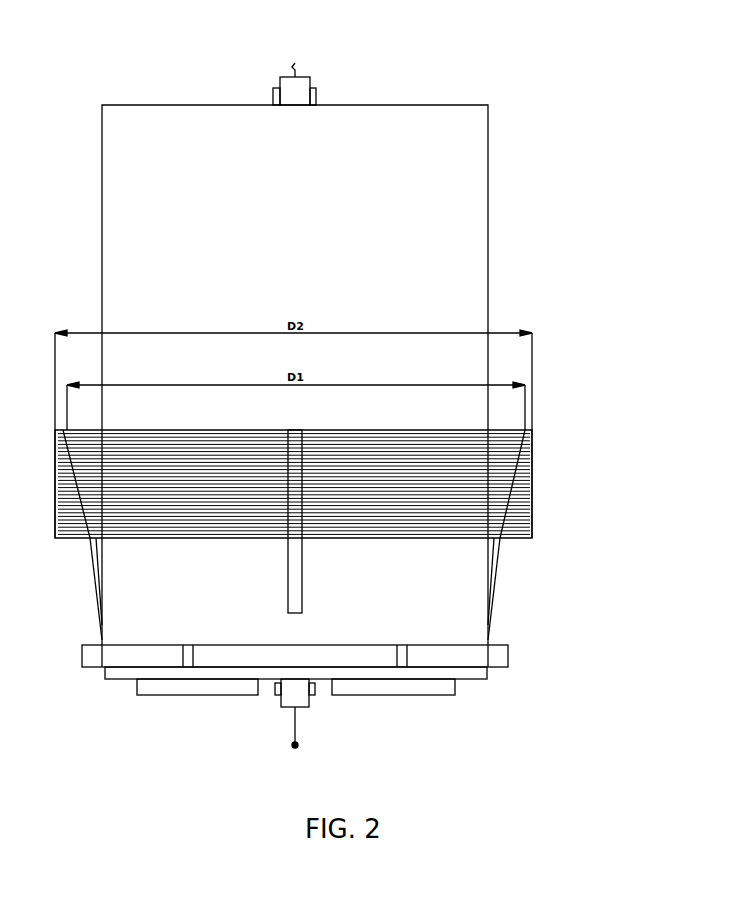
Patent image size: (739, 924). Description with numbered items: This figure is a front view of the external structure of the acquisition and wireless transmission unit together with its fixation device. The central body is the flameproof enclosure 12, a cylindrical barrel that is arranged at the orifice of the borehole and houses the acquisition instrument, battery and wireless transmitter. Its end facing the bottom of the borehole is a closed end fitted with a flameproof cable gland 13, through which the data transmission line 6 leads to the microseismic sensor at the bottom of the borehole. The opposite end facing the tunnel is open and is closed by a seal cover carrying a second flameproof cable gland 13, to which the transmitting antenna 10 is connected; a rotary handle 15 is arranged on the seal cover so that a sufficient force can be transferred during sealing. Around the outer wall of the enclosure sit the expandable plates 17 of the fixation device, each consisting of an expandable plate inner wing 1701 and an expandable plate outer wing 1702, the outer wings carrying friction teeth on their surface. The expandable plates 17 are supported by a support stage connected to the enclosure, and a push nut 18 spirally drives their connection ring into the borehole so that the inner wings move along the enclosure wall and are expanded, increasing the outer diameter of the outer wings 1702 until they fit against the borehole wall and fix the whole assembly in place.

The data transmission line 6 is at (295, 67).
The flameproof cable gland 13 is at (308, 98).
The flameproof enclosure 12 is at (447, 235).
The expandable plate outer wing 1702 is at (530, 492).
The expandable plate inner wing 1701 is at (497, 575).
The expandable plate 17 is at (457, 618).
The push nut 18 is at (497, 648).
The rotary handle 15 is at (403, 690).
The transmitting antenna 10 is at (298, 735).